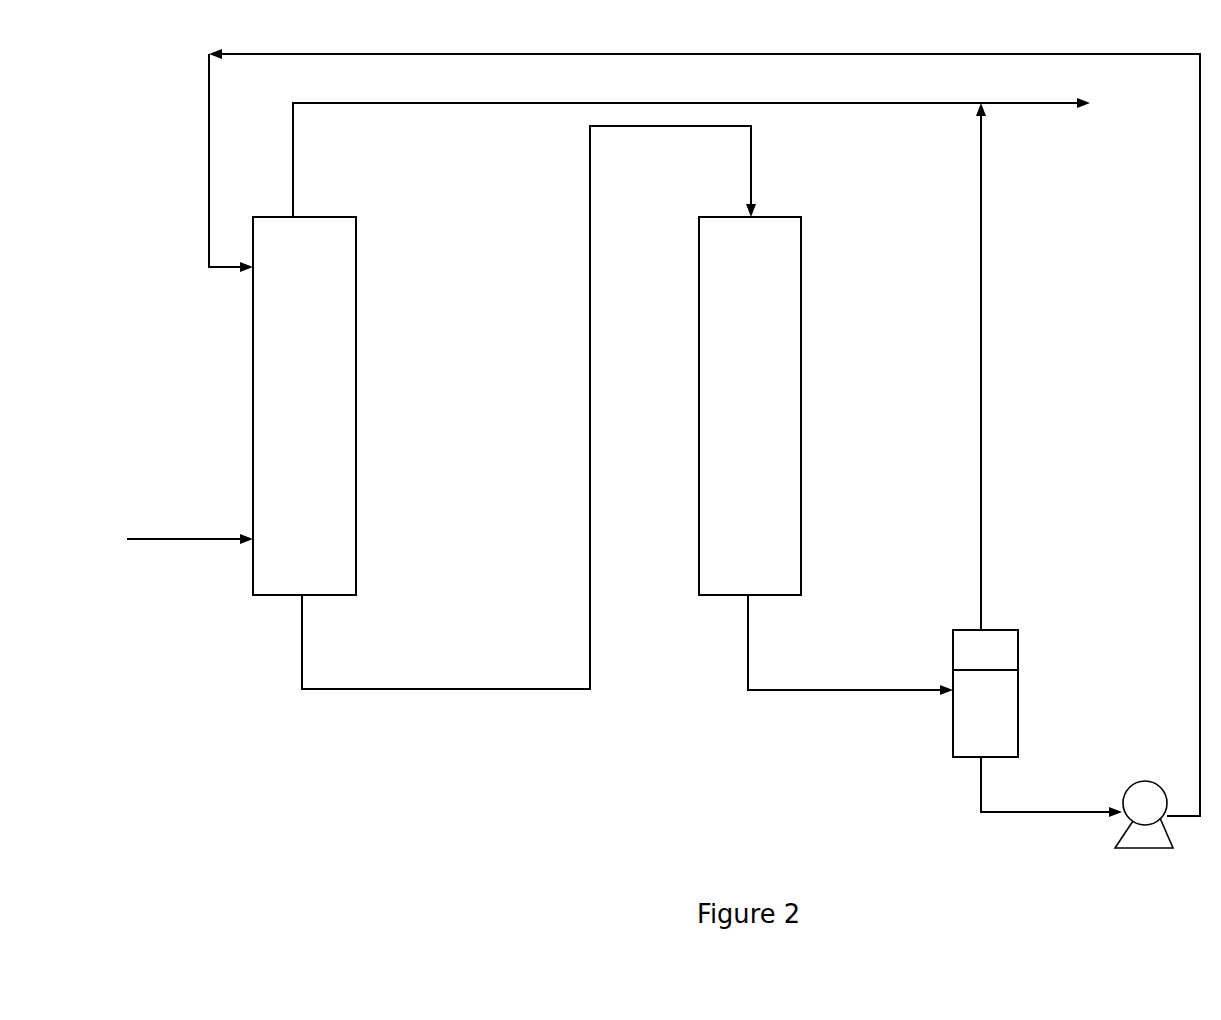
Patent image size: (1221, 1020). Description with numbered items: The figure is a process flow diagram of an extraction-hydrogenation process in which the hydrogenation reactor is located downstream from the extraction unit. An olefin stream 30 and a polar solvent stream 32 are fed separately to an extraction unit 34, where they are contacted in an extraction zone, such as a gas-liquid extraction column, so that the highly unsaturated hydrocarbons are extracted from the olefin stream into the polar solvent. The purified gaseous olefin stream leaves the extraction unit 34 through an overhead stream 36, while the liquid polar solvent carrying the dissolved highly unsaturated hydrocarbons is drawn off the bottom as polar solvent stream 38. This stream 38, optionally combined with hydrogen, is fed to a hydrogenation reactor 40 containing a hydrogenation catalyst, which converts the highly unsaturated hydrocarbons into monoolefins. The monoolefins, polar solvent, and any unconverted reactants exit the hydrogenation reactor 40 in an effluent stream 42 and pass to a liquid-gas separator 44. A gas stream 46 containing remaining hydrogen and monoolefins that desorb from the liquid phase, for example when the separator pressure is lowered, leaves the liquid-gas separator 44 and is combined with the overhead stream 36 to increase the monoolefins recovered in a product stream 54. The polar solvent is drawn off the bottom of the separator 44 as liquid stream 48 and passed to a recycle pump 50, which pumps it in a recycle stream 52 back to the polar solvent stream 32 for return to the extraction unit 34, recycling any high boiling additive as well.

The olefin stream 30 is at (183, 505).
The polar solvent stream 32 is at (194, 160).
The extraction unit 34 is at (316, 404).
The overhead stream 36 is at (637, 160).
The polar solvent stream 38 is at (529, 444).
The hydrogenation reactor 40 is at (762, 406).
The effluent stream 42 is at (812, 649).
The liquid-gas separator 44 is at (998, 663).
The gas stream 46 is at (938, 366).
The liquid stream 48 is at (1045, 822).
The recycle pump 50 is at (1125, 777).
The recycle stream 52 is at (710, 435).
The product stream 54 is at (1035, 140).